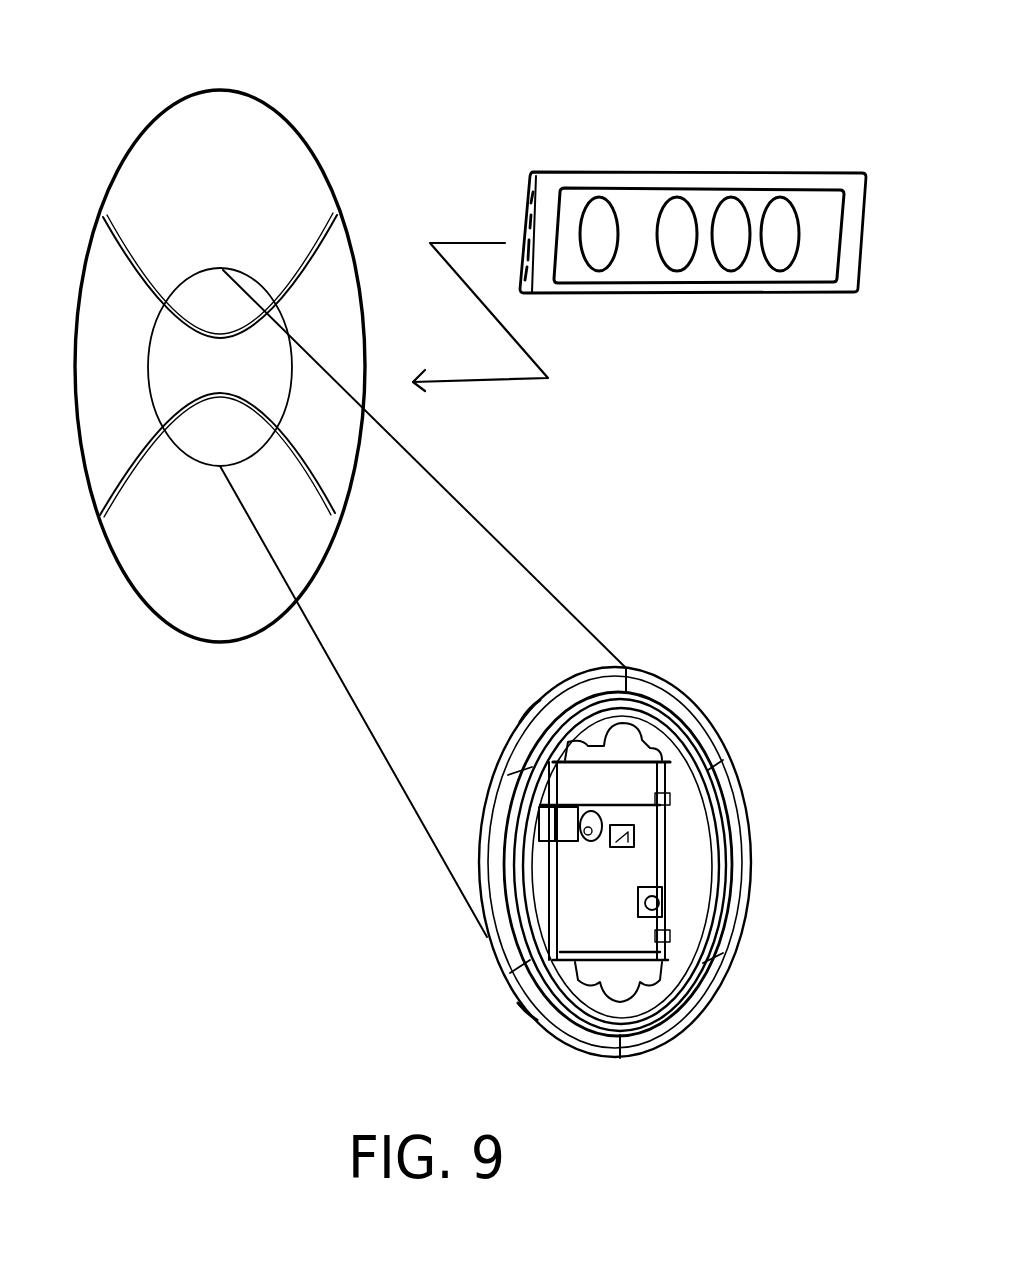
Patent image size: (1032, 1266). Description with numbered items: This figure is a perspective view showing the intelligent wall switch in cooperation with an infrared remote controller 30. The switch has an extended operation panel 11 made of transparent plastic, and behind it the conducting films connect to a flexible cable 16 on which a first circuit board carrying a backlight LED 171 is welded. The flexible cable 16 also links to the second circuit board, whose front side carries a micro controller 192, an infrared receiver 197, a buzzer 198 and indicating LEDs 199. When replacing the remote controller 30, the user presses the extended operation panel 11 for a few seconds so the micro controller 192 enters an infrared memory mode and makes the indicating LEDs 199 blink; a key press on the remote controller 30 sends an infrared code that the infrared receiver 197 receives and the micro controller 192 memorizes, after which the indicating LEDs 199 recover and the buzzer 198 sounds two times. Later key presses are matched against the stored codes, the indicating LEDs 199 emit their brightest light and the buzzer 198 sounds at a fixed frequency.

The extended operation panel 11 is at (253, 98).
The infrared remote controller 30 is at (633, 171).
The flexible cable 16 is at (630, 805).
The backlight LED 171 is at (570, 760).
The buzzer 198 is at (603, 807).
The indicating LEDs 199 is at (643, 817).
The micro controller 192 is at (620, 838).
The infrared receiver 197 is at (657, 893).